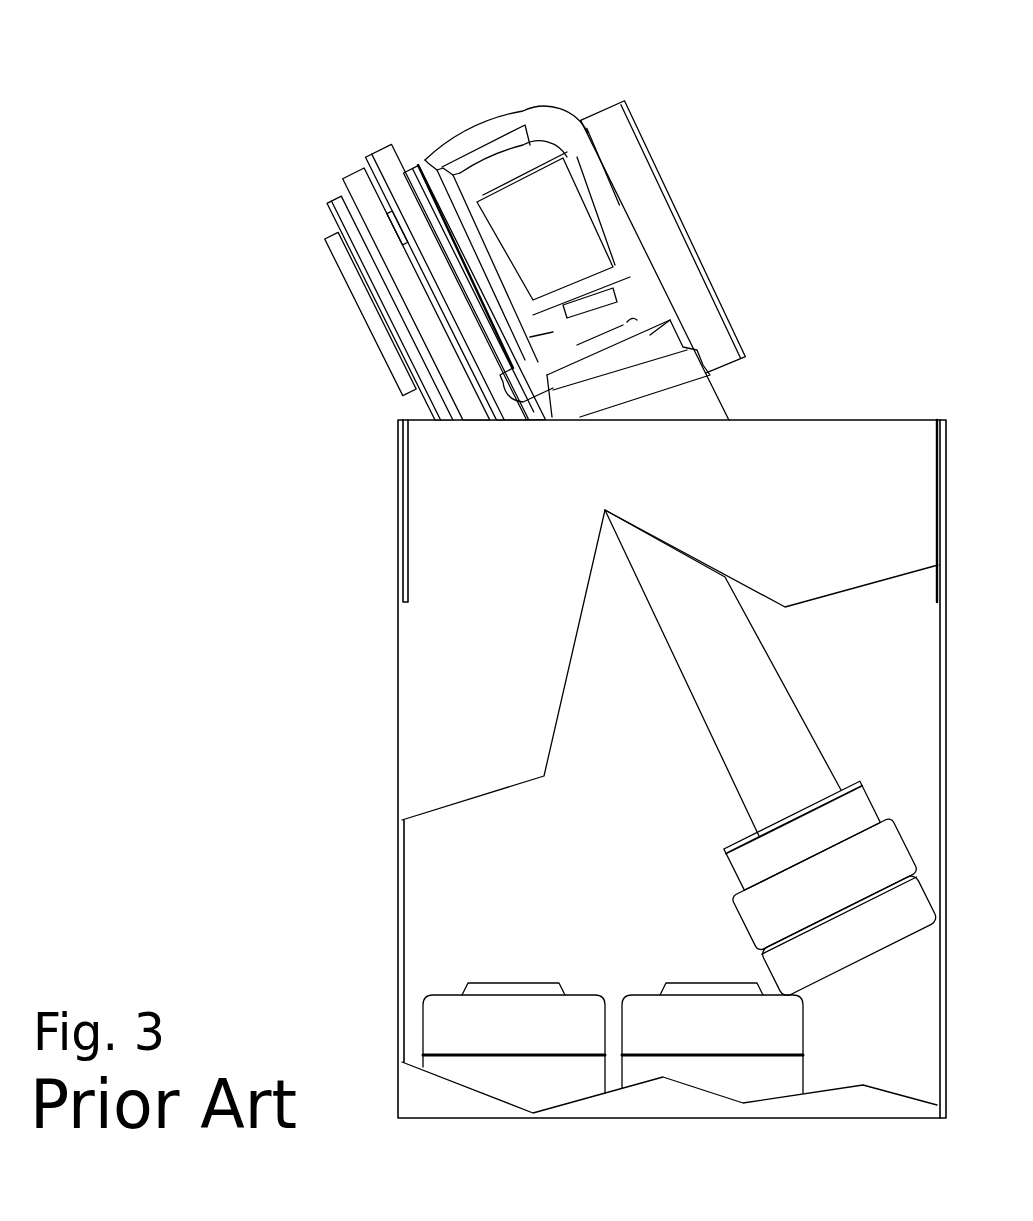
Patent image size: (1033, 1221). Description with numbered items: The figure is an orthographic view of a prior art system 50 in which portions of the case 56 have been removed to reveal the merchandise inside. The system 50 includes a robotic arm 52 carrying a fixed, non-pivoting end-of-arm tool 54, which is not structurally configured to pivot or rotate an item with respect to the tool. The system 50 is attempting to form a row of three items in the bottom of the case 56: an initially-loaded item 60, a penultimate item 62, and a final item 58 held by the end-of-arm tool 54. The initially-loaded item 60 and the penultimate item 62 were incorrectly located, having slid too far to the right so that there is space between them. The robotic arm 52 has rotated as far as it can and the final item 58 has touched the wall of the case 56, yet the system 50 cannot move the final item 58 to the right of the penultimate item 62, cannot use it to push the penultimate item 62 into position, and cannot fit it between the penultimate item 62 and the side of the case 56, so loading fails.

The prior art system 50 is at (784, 78).
The robotic arm 52 is at (447, 132).
The end-of-arm tool 54 is at (690, 677).
The case 56 is at (398, 725).
The final item 58 is at (750, 935).
The initially-loaded item 60 is at (428, 997).
The penultimate item 62 is at (648, 995).